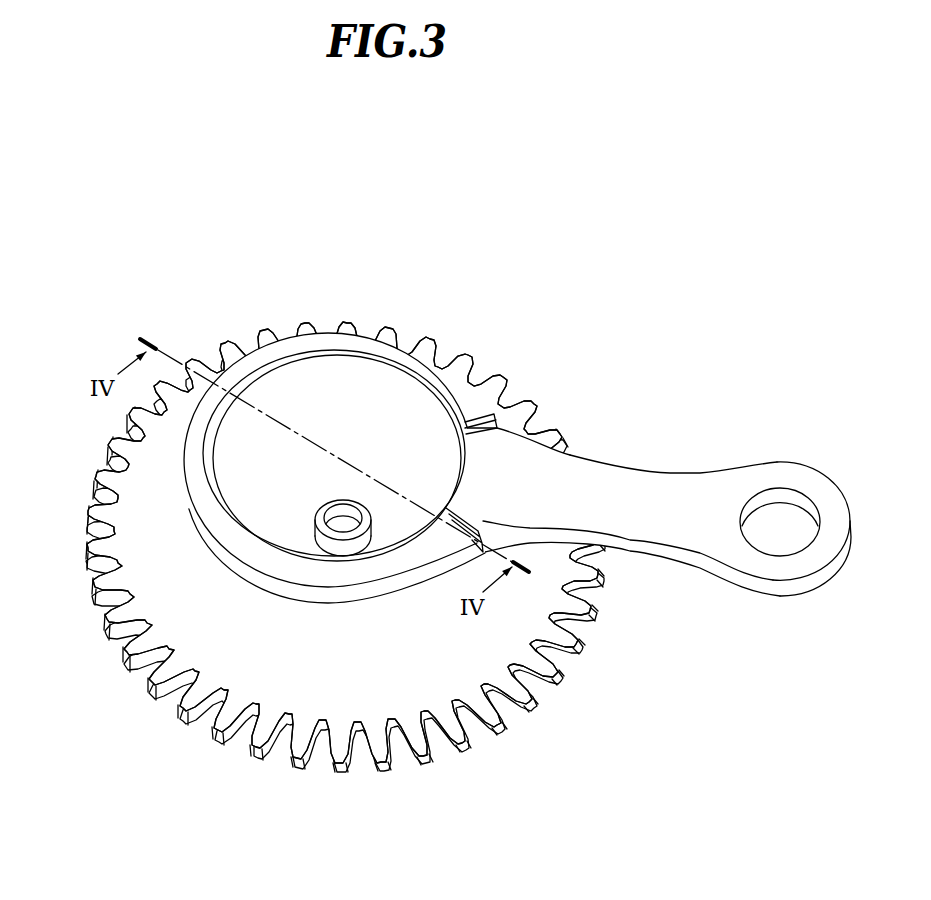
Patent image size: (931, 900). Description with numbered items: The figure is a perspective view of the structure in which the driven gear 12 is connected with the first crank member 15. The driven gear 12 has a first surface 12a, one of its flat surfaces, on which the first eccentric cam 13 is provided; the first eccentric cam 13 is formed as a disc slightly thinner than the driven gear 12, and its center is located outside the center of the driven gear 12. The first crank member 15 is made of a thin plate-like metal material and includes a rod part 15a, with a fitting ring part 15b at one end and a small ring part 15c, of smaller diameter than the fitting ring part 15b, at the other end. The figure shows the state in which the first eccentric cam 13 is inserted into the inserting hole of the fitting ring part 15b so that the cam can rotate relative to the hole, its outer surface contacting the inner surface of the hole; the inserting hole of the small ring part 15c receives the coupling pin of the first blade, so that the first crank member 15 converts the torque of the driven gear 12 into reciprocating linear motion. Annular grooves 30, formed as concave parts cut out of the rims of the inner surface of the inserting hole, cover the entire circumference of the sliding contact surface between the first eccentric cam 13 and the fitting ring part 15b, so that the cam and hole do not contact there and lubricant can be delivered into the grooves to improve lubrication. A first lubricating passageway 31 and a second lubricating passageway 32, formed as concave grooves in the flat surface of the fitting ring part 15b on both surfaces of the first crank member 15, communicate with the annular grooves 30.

The driven gear 12 is at (224, 758).
The first surface 12a is at (197, 628).
The first eccentric cam 13 is at (327, 380).
The first crank member 15 is at (575, 378).
The rod part 15a is at (661, 489).
The fitting ring part 15b is at (482, 410).
The small ring part 15c is at (781, 472).
The annular grooves 30 is at (214, 470).
The first lubricating passageway 31 is at (470, 418).
The second lubricating passageway 32 is at (487, 528).